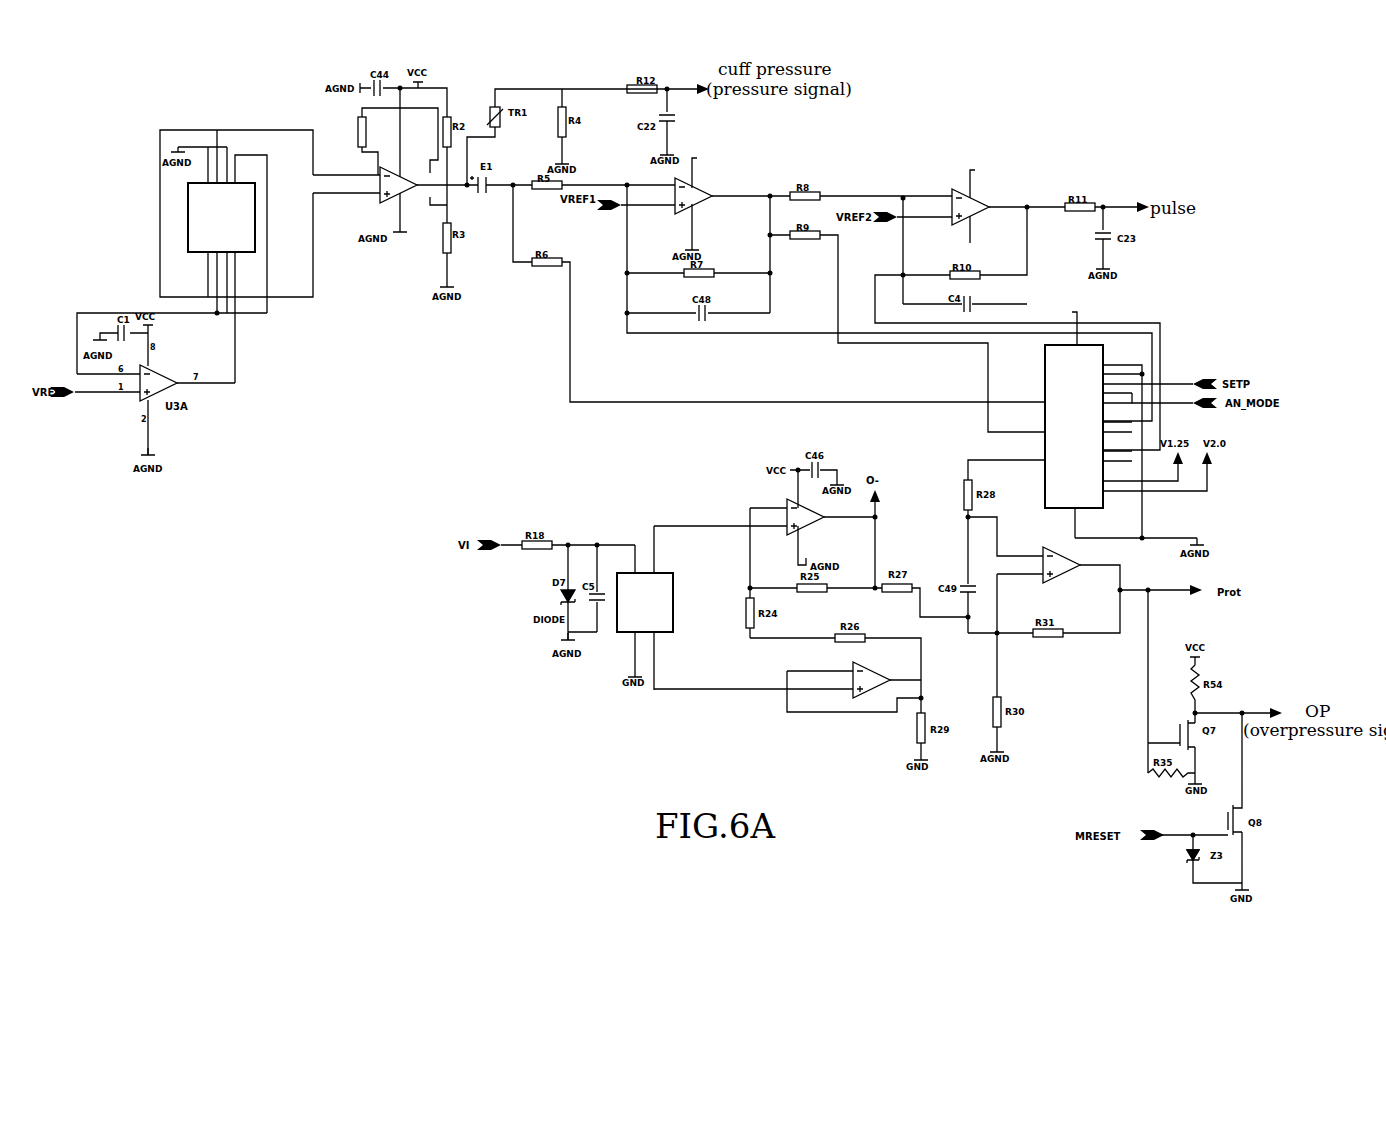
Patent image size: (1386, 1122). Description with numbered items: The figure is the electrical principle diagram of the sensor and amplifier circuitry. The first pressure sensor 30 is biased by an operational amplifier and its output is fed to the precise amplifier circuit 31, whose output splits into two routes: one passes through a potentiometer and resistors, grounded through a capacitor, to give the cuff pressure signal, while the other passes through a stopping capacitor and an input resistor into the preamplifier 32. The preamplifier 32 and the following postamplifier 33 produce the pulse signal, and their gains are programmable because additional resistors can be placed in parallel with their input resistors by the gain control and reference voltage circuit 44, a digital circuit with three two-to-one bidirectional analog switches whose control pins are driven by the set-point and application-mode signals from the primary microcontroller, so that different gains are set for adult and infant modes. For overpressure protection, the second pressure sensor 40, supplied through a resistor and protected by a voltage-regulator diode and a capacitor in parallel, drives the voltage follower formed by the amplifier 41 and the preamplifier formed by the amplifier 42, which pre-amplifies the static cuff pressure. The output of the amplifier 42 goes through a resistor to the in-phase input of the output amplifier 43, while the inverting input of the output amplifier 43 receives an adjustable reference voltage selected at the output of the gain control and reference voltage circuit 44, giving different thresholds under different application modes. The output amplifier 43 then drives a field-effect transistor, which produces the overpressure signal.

The first pressure sensor 30 is at (197, 220).
The precise amplifier circuit 31 is at (385, 183).
The preamplifier 32 is at (703, 196).
The postamplifier 33 is at (977, 203).
The second pressure sensor 40 is at (623, 587).
The amplifier 41 is at (883, 673).
The amplifier 42 is at (803, 505).
The output amplifier 43 is at (1067, 565).
The gain control and reference voltage circuit 44 is at (1100, 352).